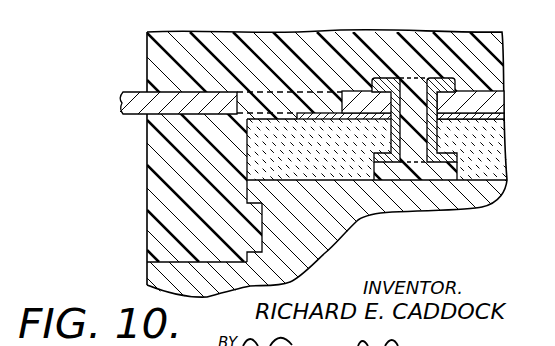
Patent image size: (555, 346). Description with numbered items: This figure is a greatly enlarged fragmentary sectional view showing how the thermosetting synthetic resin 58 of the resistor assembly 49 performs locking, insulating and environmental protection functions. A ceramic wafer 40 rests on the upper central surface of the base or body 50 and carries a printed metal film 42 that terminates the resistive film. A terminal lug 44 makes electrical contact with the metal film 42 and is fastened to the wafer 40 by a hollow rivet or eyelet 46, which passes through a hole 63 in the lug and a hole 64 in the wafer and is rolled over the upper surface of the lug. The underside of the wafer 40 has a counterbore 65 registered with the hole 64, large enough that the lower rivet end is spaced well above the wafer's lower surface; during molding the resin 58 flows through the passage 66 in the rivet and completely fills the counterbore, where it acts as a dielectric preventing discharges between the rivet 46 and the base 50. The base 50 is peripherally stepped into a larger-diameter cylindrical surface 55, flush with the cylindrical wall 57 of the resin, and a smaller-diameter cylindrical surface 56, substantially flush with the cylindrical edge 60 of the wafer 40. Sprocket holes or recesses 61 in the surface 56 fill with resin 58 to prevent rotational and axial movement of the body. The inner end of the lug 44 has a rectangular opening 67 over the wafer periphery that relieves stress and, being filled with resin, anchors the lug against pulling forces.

The mold assembly 49 is at (176, 25).
The thermosetting synthetic resin 58 is at (251, 34).
The cylindrical wall 57 is at (147, 57).
The rectangular opening 67 is at (246, 89).
The terminal lug 44 is at (132, 116).
The cylindrical edge 60 is at (246, 146).
The metal film 42 is at (316, 121).
The hole 64 is at (398, 139).
The hole 63 is at (398, 78).
The rivet or eyelet 46 is at (447, 78).
The smaller-diameter cylindrical surface 56 is at (247, 192).
The wafer 40 is at (293, 183).
The sprocket hole or recess 61 is at (258, 231).
The larger-diameter cylindrical surface 55 is at (147, 263).
The base or body 50 is at (156, 279).
The counterbore 65 is at (382, 181).
The hole or passage 66 is at (408, 181).